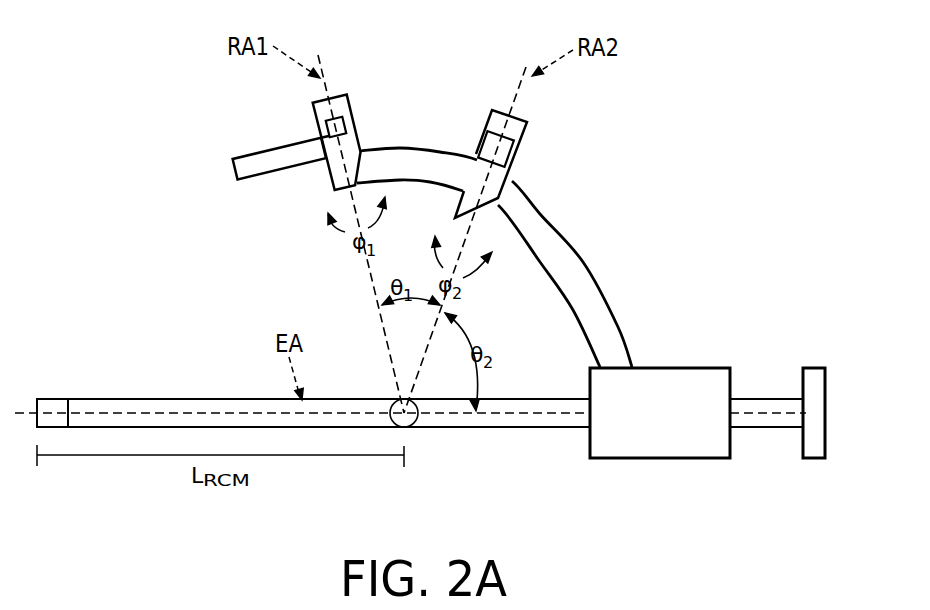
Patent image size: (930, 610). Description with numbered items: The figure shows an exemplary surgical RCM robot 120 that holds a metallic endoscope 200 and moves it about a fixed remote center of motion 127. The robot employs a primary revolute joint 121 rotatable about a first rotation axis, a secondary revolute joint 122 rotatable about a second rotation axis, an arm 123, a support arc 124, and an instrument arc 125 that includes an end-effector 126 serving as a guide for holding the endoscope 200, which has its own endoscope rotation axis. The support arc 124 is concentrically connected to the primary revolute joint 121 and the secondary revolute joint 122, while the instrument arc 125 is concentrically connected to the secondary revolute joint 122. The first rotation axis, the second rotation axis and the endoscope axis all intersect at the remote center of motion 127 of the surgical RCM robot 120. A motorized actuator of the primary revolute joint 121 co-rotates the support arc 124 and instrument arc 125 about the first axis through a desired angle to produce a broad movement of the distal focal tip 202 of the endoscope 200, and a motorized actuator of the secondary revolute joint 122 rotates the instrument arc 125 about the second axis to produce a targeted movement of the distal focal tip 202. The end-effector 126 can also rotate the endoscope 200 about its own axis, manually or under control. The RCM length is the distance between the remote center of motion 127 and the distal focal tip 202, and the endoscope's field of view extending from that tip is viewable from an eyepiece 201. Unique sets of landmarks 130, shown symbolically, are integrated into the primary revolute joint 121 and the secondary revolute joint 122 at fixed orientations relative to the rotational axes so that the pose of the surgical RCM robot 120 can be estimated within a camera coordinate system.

The surgical RCM robot 120 is at (128, 84).
The primary revolute joint 121 is at (314, 106).
The secondary revolute joint 122 is at (526, 128).
The arm 123 is at (250, 183).
The support arc 124 is at (426, 149).
The instrument arc 125 is at (583, 262).
The end-effector 126 is at (690, 368).
The remote center of motion 127 is at (405, 428).
The landmarks 130 is at (328, 131).
The metallic endoscope 200 is at (213, 390).
The eyepiece 201 is at (814, 368).
The distal focal tip 202 is at (55, 399).